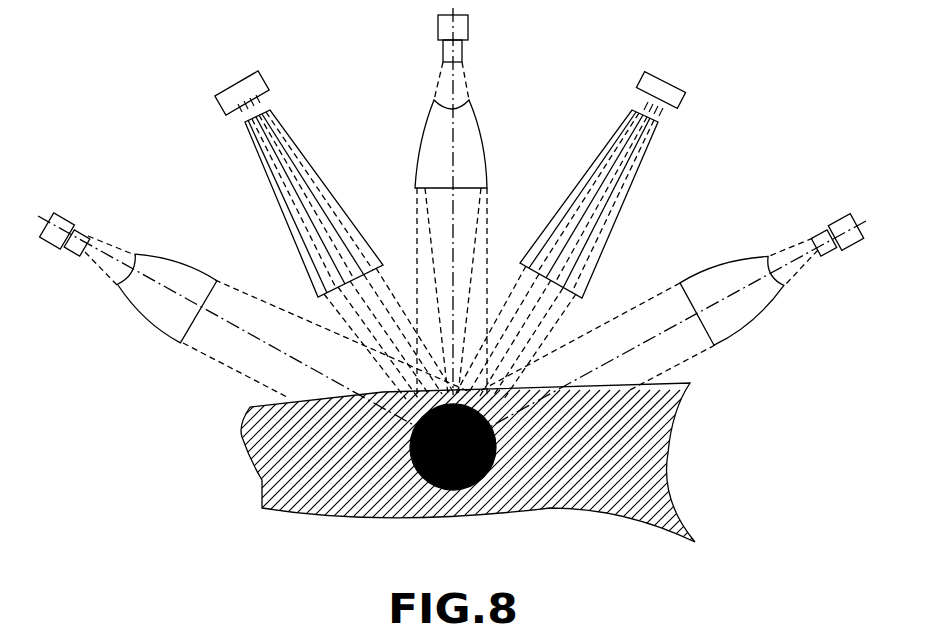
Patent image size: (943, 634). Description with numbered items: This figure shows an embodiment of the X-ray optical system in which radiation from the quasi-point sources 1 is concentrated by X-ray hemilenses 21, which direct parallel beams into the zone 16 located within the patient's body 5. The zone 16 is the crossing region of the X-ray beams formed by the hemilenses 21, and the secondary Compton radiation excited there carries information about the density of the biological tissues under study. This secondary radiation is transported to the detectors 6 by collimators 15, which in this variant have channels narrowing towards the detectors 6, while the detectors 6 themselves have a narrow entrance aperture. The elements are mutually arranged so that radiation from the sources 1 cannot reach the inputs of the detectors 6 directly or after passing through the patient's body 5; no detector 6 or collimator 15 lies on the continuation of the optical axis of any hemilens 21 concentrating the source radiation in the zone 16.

The quasi-point source 1 is at (57, 250).
The patient's body 5 is at (263, 457).
The detector 6 is at (213, 95).
The collimator 15 is at (257, 158).
The zone 16 is at (437, 483).
The X-ray hemilens 21 is at (175, 332).